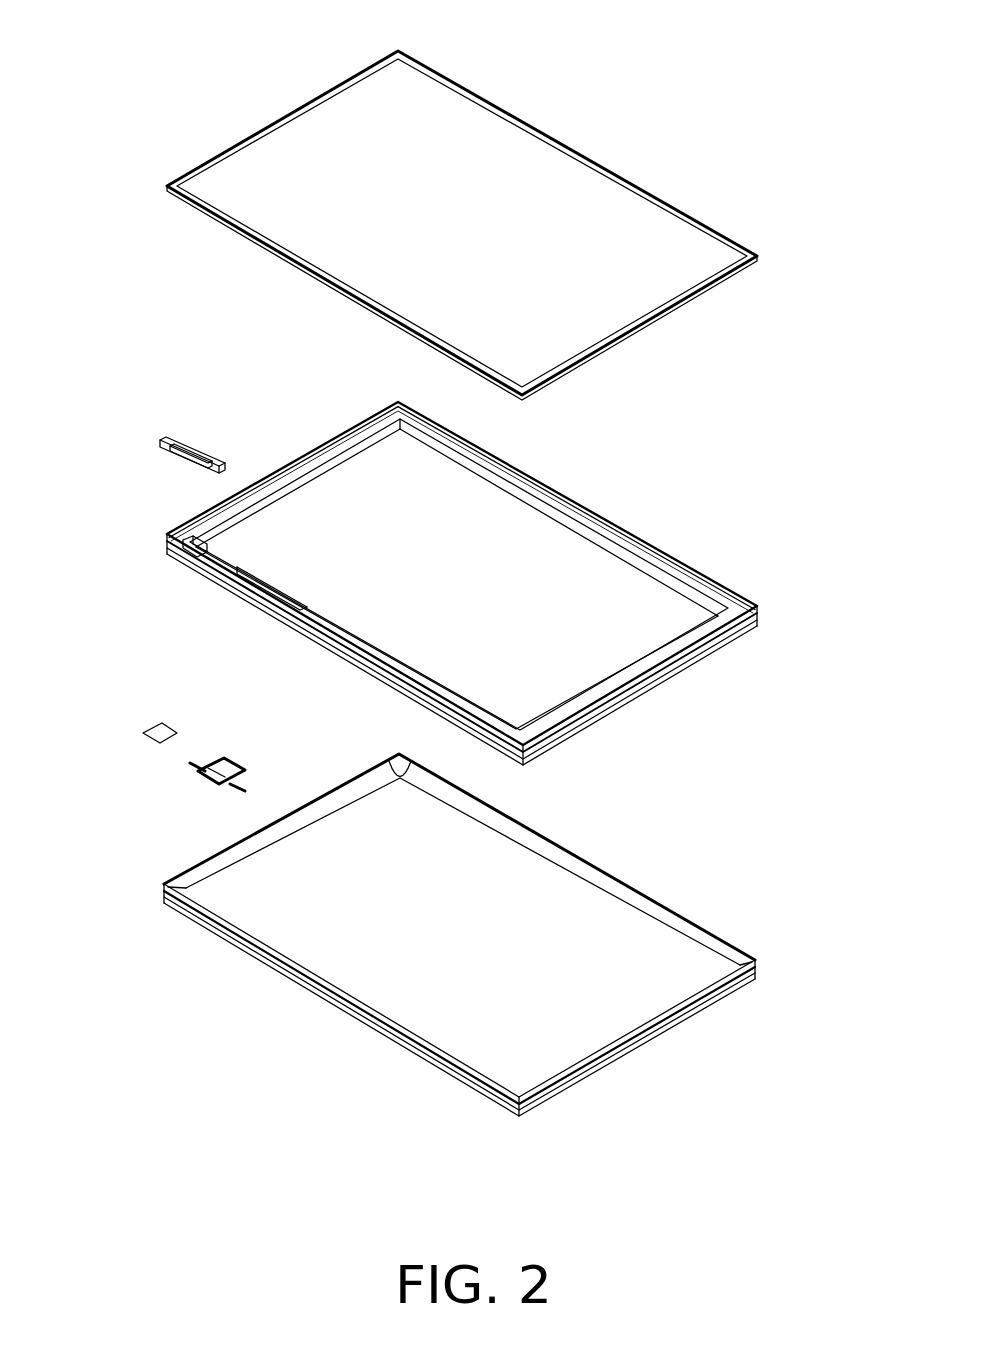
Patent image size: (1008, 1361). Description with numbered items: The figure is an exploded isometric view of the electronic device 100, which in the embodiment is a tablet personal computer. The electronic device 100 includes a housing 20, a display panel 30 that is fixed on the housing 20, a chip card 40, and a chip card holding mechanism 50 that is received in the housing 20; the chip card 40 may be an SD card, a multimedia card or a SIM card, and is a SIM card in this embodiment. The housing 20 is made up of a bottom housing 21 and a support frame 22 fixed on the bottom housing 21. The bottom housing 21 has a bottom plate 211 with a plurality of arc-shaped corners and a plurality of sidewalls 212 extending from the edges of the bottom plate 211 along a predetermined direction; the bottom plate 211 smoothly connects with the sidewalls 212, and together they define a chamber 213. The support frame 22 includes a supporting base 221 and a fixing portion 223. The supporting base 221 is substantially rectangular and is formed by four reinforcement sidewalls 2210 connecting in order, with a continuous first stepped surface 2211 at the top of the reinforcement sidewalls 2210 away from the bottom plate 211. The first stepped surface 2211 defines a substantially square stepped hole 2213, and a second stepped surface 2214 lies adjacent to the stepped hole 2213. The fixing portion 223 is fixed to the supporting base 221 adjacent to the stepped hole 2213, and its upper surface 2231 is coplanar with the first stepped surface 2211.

The electronic device 100 is at (172, 70).
The housing 20 is at (786, 732).
The bottom housing 21 is at (647, 861).
The bottom plate 211 is at (610, 1028).
The sidewalls 212 is at (695, 935).
The chamber 213 is at (684, 981).
The support frame 22 is at (656, 716).
The supporting base 221 is at (625, 538).
The reinforcement sidewalls 2210 is at (553, 481).
The first stepped surface 2211 is at (693, 582).
The stepped hole 2213 is at (217, 562).
The second stepped surface 2214 is at (180, 556).
The fixing portion 223 is at (146, 410).
The upper surface 2231 is at (198, 452).
The display panel 30 is at (727, 233).
The chip card 40 is at (152, 731).
The chip card holding mechanism 50 is at (207, 781).